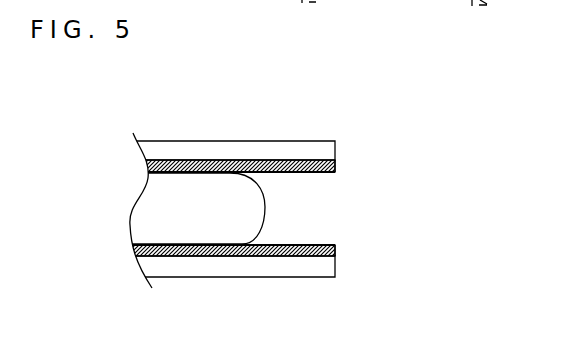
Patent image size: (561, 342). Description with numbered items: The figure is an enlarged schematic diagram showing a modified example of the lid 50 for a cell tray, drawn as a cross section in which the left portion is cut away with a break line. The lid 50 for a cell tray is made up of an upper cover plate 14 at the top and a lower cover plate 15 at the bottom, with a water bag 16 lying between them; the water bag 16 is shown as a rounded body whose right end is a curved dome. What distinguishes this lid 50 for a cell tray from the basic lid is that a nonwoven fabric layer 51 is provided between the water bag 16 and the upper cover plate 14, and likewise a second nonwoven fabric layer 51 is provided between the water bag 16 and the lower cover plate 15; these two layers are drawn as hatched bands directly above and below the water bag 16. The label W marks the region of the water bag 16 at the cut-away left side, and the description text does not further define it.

The lid for a cell tray 50 is at (145, 105).
The upper cover plate 14 is at (335, 141).
The lower cover plate 15 is at (335, 278).
The nonwoven fabric layer 51 is at (335, 166).
The water bag 16 is at (277, 207).
The width W is at (150, 208).